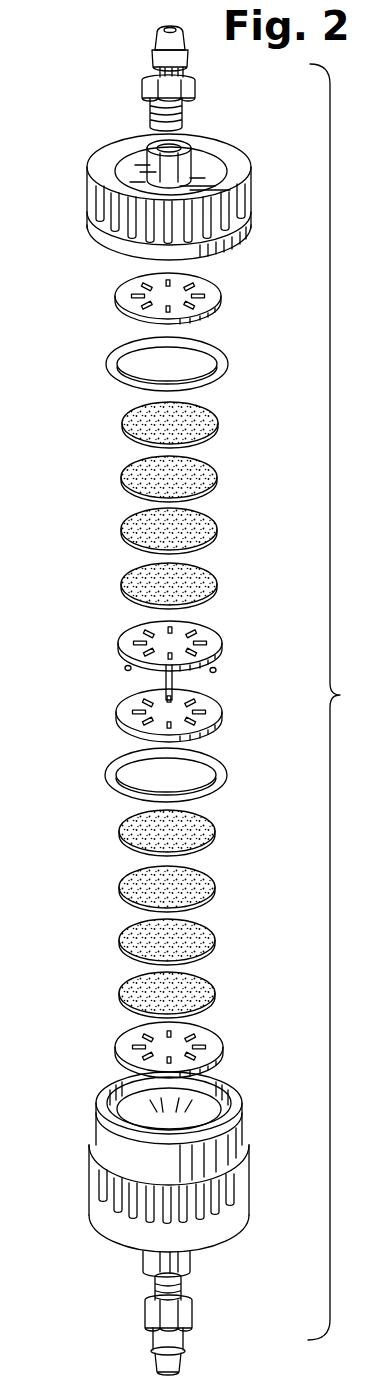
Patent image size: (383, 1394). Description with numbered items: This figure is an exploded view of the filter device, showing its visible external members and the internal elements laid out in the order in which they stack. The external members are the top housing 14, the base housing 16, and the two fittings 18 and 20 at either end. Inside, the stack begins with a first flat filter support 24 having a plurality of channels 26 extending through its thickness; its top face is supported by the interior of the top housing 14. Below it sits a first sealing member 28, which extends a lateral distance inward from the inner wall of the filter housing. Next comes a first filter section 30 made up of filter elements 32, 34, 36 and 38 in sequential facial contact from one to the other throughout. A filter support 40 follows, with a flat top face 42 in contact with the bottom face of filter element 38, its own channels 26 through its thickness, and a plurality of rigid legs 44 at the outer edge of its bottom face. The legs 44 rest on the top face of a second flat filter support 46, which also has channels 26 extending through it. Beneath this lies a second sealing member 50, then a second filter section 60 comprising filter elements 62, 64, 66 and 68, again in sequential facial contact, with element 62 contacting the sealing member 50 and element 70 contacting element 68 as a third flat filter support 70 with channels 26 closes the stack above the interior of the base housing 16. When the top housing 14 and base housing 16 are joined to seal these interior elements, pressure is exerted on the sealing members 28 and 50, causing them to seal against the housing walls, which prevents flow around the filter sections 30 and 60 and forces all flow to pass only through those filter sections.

The top housing 14 is at (88, 172).
The base housing 16 is at (90, 1178).
The external member 18 is at (152, 55).
The external member 20 is at (147, 1322).
The first flat filter support 24 is at (172, 290).
The channels 26 is at (131, 290).
The first sealing member 28 is at (228, 363).
The first filter section 30 is at (165, 503).
The filter element 32 is at (122, 425).
The filter element 34 is at (121, 478).
The filter element 36 is at (121, 530).
The filter element 38 is at (122, 583).
The filter support 40 is at (129, 651).
The flat top face 42 is at (138, 628).
The rigid legs 44 is at (126, 669).
The second flat filter support 46 is at (118, 713).
The second sealing member 50 is at (106, 776).
The second filter section 60 is at (166, 913).
The filter element 62 is at (119, 831).
The filter element 64 is at (119, 886).
The filter element 66 is at (119, 940).
The filter element 68 is at (119, 993).
The third flat filter support 70 is at (120, 1040).